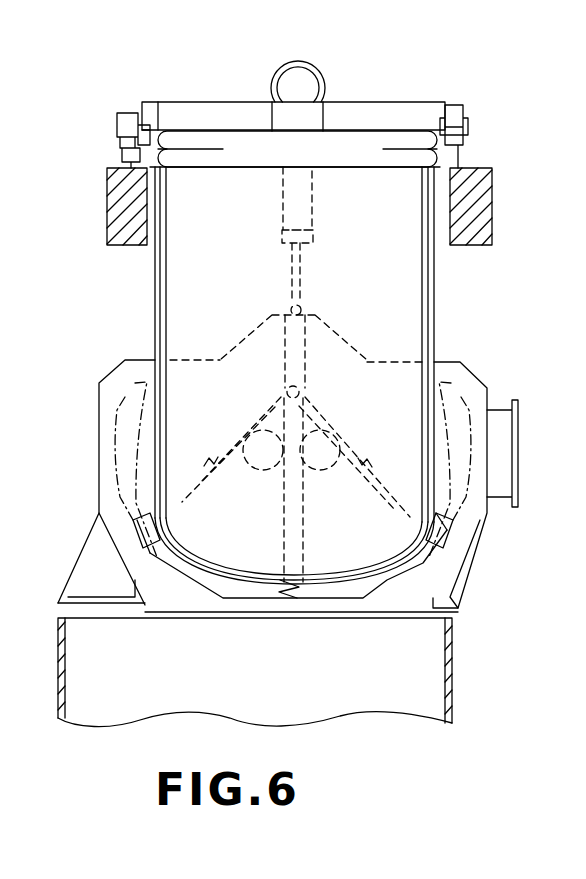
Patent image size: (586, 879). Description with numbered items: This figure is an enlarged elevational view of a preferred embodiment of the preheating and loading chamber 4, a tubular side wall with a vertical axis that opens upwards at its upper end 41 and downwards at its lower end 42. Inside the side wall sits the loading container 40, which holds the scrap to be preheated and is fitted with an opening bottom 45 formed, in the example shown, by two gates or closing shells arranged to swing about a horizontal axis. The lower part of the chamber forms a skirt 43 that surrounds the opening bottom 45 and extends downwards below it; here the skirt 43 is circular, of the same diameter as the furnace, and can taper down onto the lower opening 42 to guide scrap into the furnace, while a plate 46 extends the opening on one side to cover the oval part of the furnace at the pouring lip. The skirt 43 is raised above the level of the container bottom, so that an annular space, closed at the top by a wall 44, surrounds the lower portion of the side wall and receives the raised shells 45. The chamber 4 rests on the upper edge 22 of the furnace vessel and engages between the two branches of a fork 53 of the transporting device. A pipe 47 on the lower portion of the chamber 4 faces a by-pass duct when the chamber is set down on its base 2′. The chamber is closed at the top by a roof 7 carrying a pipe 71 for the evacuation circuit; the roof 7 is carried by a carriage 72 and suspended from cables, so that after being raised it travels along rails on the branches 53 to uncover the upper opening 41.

The base 2′ is at (470, 702).
The preheating chamber 4 is at (458, 322).
The roof 7 is at (382, 140).
The upper edge of furnace vessel 22 is at (452, 618).
The loading container 40 is at (197, 267).
The upper end 41 is at (367, 170).
The lower end 42 is at (338, 613).
The skirt 43 is at (98, 433).
The wall 44 is at (130, 360).
The opening bottom 45 is at (380, 580).
The plate 46 is at (103, 605).
The pipe 47 is at (503, 408).
The fork 53 is at (107, 197).
The pipe 71 is at (272, 106).
The carriage 72 is at (455, 105).